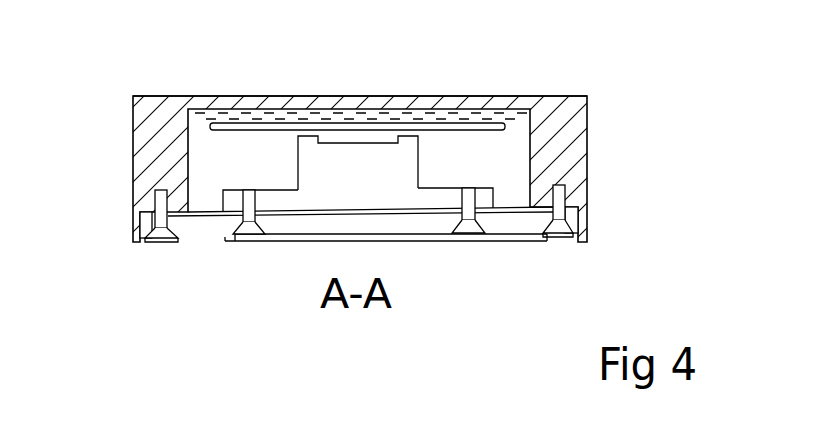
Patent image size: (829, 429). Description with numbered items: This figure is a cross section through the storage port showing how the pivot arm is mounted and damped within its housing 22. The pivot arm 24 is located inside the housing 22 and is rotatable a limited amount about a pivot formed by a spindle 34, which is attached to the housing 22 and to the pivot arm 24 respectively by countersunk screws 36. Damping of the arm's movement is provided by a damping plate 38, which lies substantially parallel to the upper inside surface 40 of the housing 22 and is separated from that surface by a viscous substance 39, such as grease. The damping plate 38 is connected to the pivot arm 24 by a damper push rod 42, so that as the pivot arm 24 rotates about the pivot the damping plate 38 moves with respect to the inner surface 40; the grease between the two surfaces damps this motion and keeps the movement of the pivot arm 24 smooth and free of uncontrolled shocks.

The housing 22 is at (150, 125).
The pivot arm 24 is at (435, 242).
The spindle 34 is at (202, 228).
The countersunk screws 36 is at (562, 240).
The damping plate 38 is at (478, 123).
The viscous substance 39 is at (337, 115).
The upper inside surface 40 is at (243, 108).
The damper push rod 42 is at (403, 157).